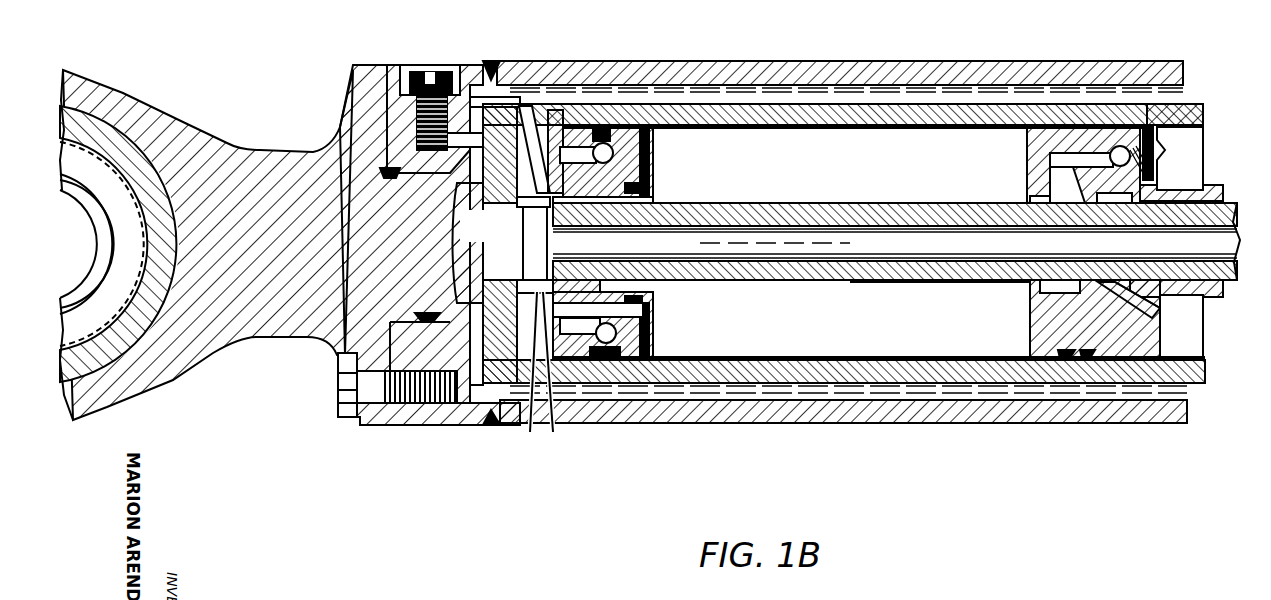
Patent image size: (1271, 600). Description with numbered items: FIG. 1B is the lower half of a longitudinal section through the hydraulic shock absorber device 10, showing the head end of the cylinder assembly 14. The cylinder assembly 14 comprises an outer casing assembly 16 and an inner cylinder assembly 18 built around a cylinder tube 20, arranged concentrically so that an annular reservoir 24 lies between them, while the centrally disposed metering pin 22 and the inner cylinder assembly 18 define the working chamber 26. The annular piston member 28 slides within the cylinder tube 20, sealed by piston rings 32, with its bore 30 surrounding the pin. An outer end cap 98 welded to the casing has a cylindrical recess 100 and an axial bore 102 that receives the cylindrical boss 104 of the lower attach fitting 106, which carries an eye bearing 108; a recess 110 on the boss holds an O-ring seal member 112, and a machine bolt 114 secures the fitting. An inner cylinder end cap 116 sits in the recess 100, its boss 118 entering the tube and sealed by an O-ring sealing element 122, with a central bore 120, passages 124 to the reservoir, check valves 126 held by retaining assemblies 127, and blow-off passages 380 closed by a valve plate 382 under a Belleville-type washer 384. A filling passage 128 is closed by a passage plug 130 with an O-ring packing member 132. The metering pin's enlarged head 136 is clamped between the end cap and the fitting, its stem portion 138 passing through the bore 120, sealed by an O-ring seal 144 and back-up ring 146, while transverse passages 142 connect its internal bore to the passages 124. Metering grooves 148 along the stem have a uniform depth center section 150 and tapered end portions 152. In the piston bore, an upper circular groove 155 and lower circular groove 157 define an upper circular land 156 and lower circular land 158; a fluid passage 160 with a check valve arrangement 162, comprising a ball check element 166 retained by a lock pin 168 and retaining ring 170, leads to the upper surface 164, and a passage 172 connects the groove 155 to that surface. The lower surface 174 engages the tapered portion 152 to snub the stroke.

The hydraulic-type shock absorber device 10 is at (970, 428).
The cylinder assembly 14 is at (722, 430).
The outer casing assembly 16 is at (830, 62).
The inner cylinder assembly 18 is at (840, 132).
The cylinder tube 20 is at (925, 128).
The metering pin 22 is at (925, 281).
The annular chamber or reservoir 24 is at (700, 72).
The working chamber 26 is at (835, 180).
The annular piston member 28 is at (1030, 325).
The bore or surface 30 is at (1150, 283).
The piston rings 32 is at (1074, 339).
The outer end cap 98 is at (440, 425).
The cylindrical recess 100 is at (527, 120).
The axial bore 102 is at (420, 348).
The cylindrical boss 104 is at (383, 183).
The lower attach fitting 106 is at (150, 98).
The eye or plain bearing 108 is at (172, 184).
The recess 110 is at (425, 315).
The O-ring seal member 112 is at (402, 178).
The machine bolt 114 is at (334, 430).
The inner cylinder end cap 116 is at (648, 172).
The cylindrical boss 118 is at (654, 356).
The central bore 120 is at (648, 200).
The O-ring type sealing element 122 is at (606, 130).
The passages 124 is at (558, 150).
The check valves 126 is at (652, 173).
The retaining assemblies 127 is at (648, 318).
The filling passage 128 is at (478, 95).
The passage plug 130 is at (420, 70).
The O-ring packing member 132 is at (388, 68).
The enlarged head 136 is at (464, 236).
The elongate stem portion 138 is at (895, 227).
The transverse passages 142 is at (558, 232).
The O-ring seal 144 is at (582, 280).
The back-up ring 146 is at (560, 263).
The metering grooves 148 is at (955, 204).
The uniform depth center section 150 is at (1085, 226).
The tapered end portion 152 is at (822, 231).
The upper circular groove 155 is at (1110, 284).
The upper circular land 156 is at (1170, 188).
The lower circular groove 157 is at (1052, 206).
The lower circular land 158 is at (1022, 203).
The fluid passage 160 is at (1050, 144).
The check valve arrangement 162 is at (1156, 160).
The upper surface 164 is at (1162, 338).
The ball check element 166 is at (1116, 146).
The lock pin 168 is at (1195, 137).
The retaining ring 170 is at (1150, 122).
The passage 172 is at (1129, 309).
The lower surface 174 is at (1030, 292).
The blow-off passages 380 is at (648, 188).
The valve plate 382 is at (553, 432).
The Belleville-type washer 384 is at (515, 376).